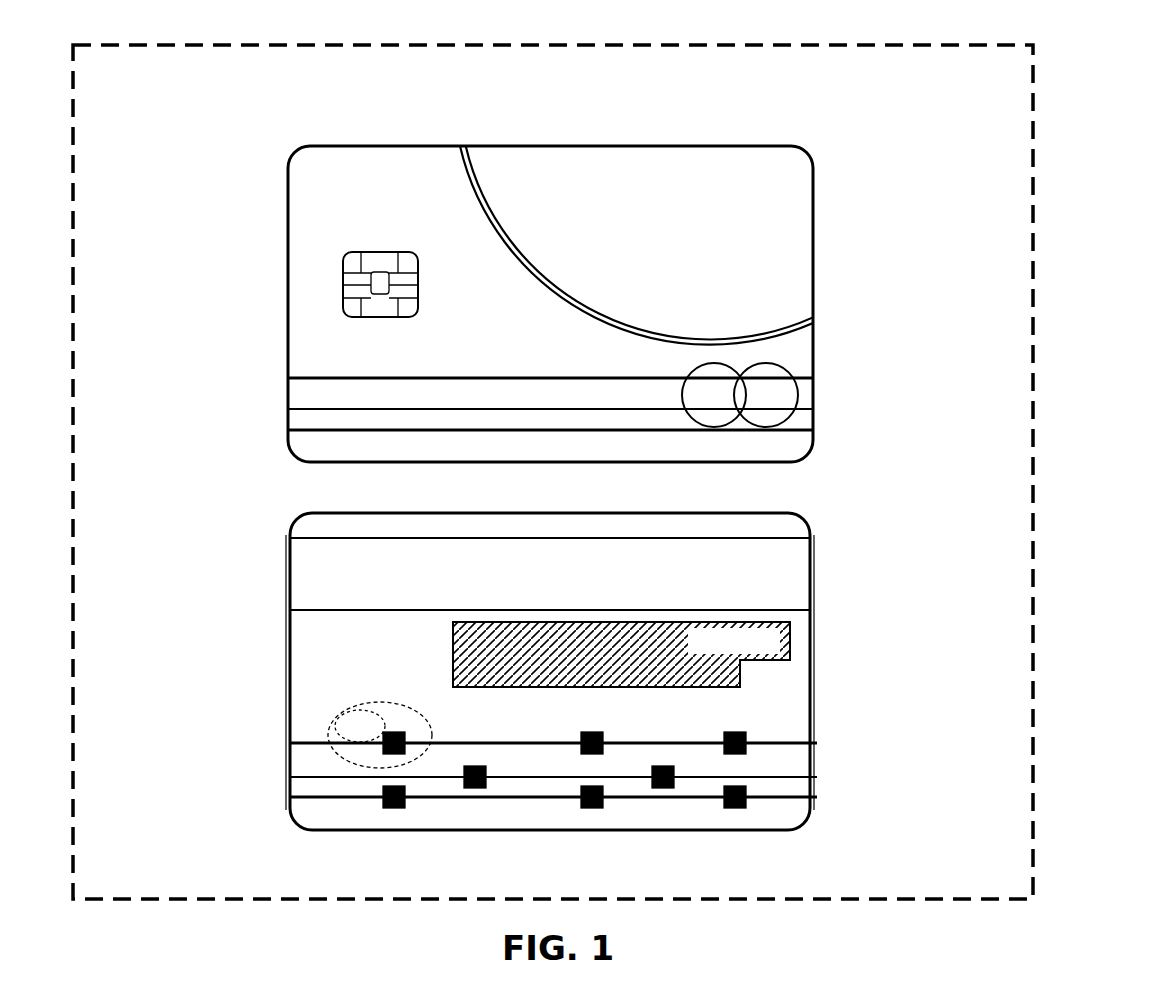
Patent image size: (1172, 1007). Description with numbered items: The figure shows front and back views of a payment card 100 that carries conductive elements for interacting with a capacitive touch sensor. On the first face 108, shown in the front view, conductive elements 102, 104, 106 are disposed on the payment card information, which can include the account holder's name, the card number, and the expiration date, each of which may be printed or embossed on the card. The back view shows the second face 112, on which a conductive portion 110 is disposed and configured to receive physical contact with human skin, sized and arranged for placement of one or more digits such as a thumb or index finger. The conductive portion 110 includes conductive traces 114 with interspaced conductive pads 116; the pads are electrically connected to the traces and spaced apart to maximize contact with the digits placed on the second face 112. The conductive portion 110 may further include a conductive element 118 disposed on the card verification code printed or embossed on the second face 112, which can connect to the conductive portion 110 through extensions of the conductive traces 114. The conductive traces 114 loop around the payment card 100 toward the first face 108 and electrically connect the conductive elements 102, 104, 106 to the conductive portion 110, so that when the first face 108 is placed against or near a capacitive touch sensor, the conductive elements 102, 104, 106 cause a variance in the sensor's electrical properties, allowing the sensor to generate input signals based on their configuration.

The payment card 100 is at (1030, 167).
The conductive element 102 is at (312, 366).
The conductive element 104 is at (312, 398).
The conductive element 106 is at (312, 421).
The first face 108 is at (818, 202).
The conductive portion 110 is at (213, 598).
The second face 112 is at (290, 605).
The conductive traces 114 is at (800, 378).
The conductive pads 116 is at (393, 735).
The conductive element 118 is at (765, 625).